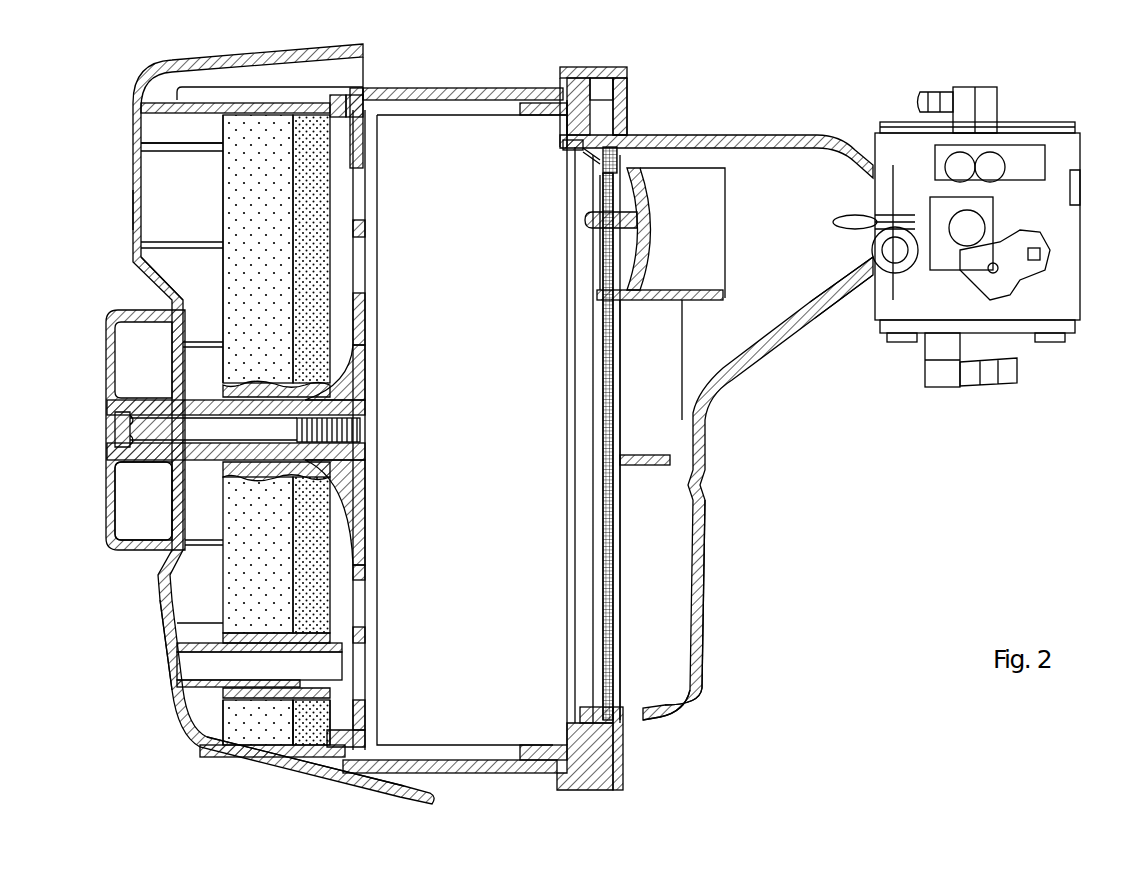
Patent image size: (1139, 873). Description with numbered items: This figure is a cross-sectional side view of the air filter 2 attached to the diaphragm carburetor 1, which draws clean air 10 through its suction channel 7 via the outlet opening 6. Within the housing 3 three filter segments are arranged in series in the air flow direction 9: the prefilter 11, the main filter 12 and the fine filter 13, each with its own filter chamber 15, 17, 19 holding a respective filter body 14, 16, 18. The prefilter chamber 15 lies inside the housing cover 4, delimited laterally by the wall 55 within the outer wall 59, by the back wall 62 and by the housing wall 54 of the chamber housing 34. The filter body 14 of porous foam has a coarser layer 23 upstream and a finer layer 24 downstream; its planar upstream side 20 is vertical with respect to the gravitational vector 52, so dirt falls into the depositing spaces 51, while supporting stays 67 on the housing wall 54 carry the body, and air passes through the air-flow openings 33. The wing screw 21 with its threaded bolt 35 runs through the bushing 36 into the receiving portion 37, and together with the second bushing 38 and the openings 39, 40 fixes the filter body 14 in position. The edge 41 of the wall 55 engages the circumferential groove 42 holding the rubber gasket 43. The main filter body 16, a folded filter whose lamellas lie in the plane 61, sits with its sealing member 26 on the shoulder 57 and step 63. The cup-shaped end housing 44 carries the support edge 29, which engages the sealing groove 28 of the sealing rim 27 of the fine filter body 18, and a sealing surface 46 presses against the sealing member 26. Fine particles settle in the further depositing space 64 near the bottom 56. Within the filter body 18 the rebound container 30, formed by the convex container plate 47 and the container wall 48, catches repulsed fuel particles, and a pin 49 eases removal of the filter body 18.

The carburetor 1 is at (1050, 100).
The air filter 2 is at (700, 100).
The housing 3 is at (400, 805).
The housing cover 4 is at (133, 150).
The outlet opening 6 is at (858, 270).
The suction channel 7 is at (1072, 278).
The air flow direction 9 is at (420, 340).
The clean air 10 is at (840, 188).
The prefilter 11 is at (207, 128).
The main filter 12 is at (458, 102).
The fine filter 13 is at (620, 160).
The filter body 14 is at (240, 212).
The filter chamber 15 is at (180, 263).
The filter body 16 is at (478, 392).
The filter chamber 17 is at (497, 103).
The filter body 18 is at (612, 633).
The filter chamber 19 is at (660, 578).
The upstream side 20 is at (220, 185).
The wing screw 21 is at (107, 350).
The layer 23 is at (243, 760).
The layer 24 is at (300, 760).
The sealing member 26 is at (598, 793).
The sealing rim 27 is at (590, 158).
The sealing groove 28 is at (565, 148).
The support edge 29 is at (588, 95).
The rebound container 30 is at (720, 167).
The air-flow openings 33 is at (360, 250).
The chamber housing 34 is at (475, 778).
The threaded bolt 35 is at (143, 437).
The bushing 36 is at (165, 478).
The receiving portion 37 is at (365, 432).
The second bushing 38 is at (190, 700).
The opening 39 is at (215, 392).
The opening 40 is at (218, 637).
The edge 41 is at (320, 98).
The circumferential groove 42 is at (342, 100).
The rubber gasket 43 is at (380, 97).
The end housing 44 is at (693, 512).
The sealing surface 46 is at (622, 90).
The container plate 47 is at (645, 250).
The container wall 48 is at (660, 300).
The pin 49 is at (588, 218).
The depositing spaces 51 is at (163, 595).
The vector of the gravitational force 52 is at (422, 312).
The housing wall 54 is at (362, 530).
The wall 55 is at (248, 105).
The bottom 56 is at (650, 720).
The circumferential shoulder 57 is at (560, 793).
The outer wall 59 is at (340, 787).
The plane 61 is at (500, 720).
The back wall 62 is at (133, 210).
The step 63 is at (570, 737).
The further depositing space 64 is at (660, 688).
The supporting stays 67 is at (340, 333).